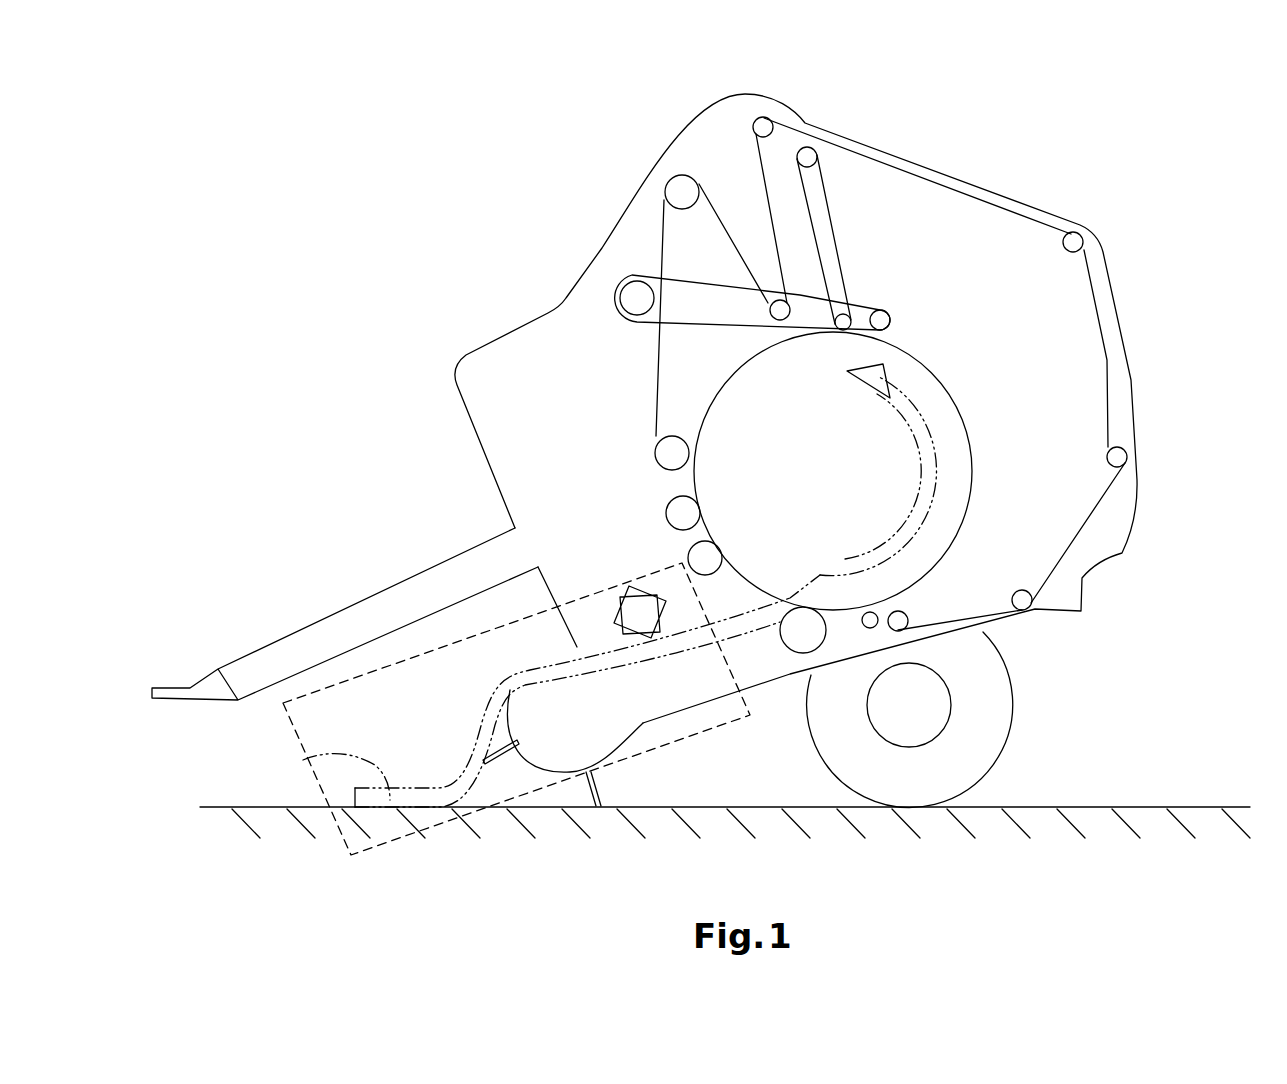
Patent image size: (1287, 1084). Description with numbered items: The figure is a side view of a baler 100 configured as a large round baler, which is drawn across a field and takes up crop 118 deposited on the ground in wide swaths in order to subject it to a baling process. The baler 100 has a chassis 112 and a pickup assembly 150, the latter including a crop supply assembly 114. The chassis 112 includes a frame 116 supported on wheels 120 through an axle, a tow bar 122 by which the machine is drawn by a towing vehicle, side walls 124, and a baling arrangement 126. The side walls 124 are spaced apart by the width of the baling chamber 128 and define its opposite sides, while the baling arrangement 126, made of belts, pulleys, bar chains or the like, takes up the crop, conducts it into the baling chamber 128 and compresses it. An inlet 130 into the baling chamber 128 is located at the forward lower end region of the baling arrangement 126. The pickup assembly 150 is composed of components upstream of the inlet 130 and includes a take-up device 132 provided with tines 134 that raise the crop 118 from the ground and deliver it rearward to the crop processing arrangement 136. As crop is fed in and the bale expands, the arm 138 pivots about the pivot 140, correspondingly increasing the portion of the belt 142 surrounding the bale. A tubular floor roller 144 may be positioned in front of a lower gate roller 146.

The baler 100 is at (458, 150).
The chassis 112 is at (1122, 598).
The crop supply assembly 114 is at (470, 697).
The frame 116 is at (480, 403).
The crop 118 is at (303, 760).
The wheels 120 is at (1005, 707).
The tow bar 122 is at (305, 642).
The side walls 124 is at (1013, 195).
The baling arrangement 126 is at (838, 218).
The baling chamber 128 is at (824, 448).
The inlet 130 is at (802, 608).
The take-up device 132 is at (565, 747).
The tines 134 is at (603, 790).
The crop processing arrangement 136 is at (635, 592).
The arm 138 is at (692, 300).
The pivot 140 is at (637, 298).
The belt 142 is at (657, 375).
The floor roller 144 is at (795, 632).
The lower gate roller 146 is at (870, 627).
The pickup assembly 150 is at (350, 855).